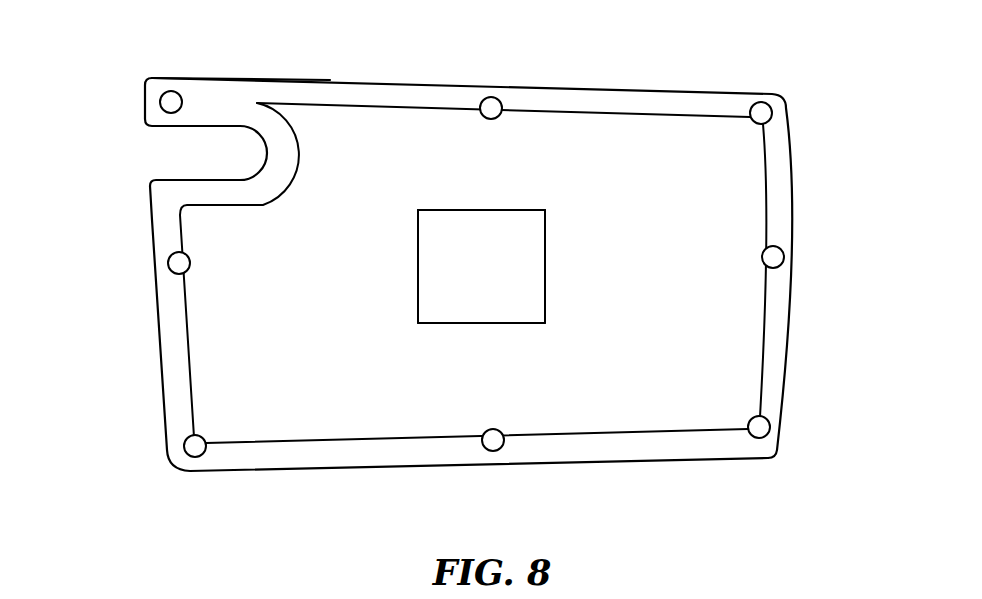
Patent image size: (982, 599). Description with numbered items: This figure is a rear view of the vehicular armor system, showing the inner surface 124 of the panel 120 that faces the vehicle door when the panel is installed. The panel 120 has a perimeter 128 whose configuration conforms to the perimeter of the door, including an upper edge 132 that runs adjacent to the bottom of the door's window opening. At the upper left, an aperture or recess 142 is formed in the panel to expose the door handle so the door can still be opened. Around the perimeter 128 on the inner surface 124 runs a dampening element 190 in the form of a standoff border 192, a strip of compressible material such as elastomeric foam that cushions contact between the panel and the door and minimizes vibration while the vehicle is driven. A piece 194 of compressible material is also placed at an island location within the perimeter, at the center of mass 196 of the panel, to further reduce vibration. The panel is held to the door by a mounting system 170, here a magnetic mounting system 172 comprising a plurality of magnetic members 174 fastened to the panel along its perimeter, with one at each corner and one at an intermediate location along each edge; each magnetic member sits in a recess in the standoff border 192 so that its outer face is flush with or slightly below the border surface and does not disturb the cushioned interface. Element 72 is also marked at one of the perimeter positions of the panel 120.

The mounting hole 72 is at (171, 97).
The panel 120 is at (720, 373).
The inner surface 124 is at (578, 398).
The perimeter 128 is at (797, 218).
The upper edge 132 is at (625, 90).
The aperture or recess 142 is at (183, 128).
The mounting system 170 is at (124, 96).
The magnetic mounting system 172 is at (170, 262).
The magnetic members 174 is at (493, 103).
The dampening element 190 is at (378, 90).
The standoff border 192 is at (257, 452).
The pieces of compressible material 194 is at (540, 247).
The center of mass 196 is at (480, 267).